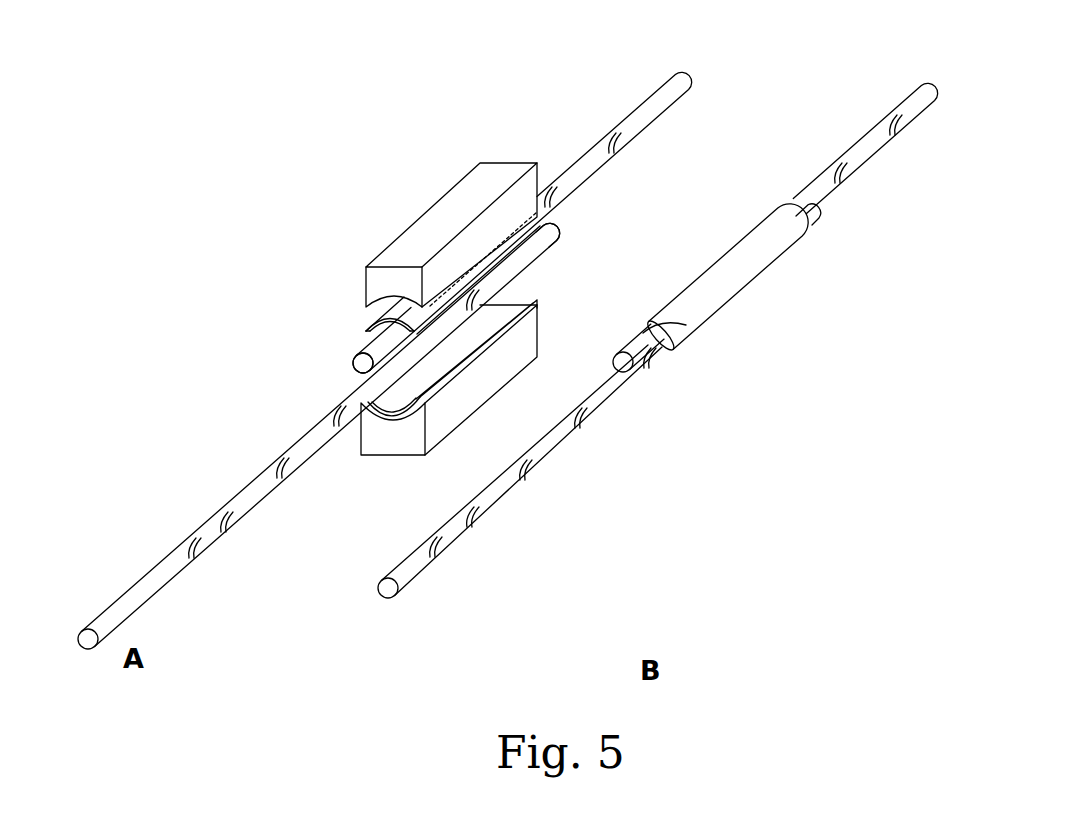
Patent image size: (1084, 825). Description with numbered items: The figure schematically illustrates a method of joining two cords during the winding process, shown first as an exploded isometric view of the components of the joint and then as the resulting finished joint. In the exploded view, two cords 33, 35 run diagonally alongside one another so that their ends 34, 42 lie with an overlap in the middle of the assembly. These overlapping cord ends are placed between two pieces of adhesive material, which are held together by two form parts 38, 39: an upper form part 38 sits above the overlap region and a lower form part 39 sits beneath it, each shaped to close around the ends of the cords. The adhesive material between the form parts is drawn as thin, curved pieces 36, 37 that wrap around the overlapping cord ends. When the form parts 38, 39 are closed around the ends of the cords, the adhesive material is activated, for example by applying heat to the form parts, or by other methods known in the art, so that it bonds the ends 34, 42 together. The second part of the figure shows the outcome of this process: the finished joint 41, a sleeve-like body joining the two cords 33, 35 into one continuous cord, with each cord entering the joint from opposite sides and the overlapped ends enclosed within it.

In FIG. 5A, the cord 33 is at (593, 155).
In FIG. 5B, the cord 33 is at (893, 136).
In FIG. 5A, the cord end 34 is at (550, 233).
In FIG. 5A, the cord 35 is at (242, 502).
In FIG. 5B, the cord 35 is at (480, 515).
In FIG. 5A, the U-shaped channel 36 is at (536, 300).
In FIG. 5A, the thin plate 37 is at (365, 322).
In FIG. 5A, the form part 38 is at (407, 243).
In FIG. 5A, the form part 39 is at (383, 442).
In FIG. 5B, the joint 41 is at (752, 287).
In FIG. 5A, the cord end 42 is at (358, 356).